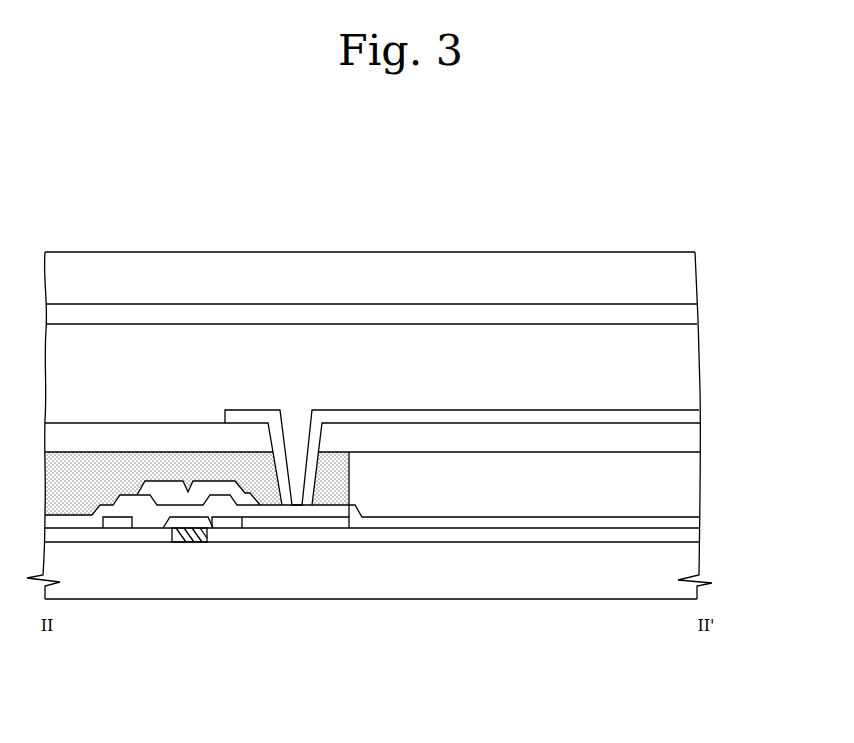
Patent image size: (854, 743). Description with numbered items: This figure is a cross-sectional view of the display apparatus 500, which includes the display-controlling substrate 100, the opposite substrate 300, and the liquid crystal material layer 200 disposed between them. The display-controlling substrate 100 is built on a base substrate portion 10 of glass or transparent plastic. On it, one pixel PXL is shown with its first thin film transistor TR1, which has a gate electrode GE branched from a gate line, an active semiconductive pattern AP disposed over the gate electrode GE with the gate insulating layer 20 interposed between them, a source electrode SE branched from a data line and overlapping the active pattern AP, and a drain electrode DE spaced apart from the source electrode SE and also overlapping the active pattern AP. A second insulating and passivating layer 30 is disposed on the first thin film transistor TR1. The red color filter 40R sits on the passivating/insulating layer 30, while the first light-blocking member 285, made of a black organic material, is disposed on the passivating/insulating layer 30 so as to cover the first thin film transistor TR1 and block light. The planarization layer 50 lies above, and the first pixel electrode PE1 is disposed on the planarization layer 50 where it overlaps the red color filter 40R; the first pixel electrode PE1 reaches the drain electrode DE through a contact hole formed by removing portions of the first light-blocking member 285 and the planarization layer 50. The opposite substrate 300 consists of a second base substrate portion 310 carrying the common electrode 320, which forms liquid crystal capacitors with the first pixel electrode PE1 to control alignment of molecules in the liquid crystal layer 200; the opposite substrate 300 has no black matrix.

The display apparatus 500 is at (688, 205).
The opposite substrate 300 is at (764, 265).
The second base substrate portion 310 is at (688, 275).
The common electrode 320 is at (688, 316).
The liquid crystal material layer 200 is at (688, 368).
The display-controlling substrate 100 is at (764, 432).
The planarization layer 50 is at (688, 437).
The red color filter 40R is at (688, 485).
The first light-blocking member 285 is at (112, 470).
The passivating/insulating layer 30 is at (690, 521).
The gate insulating layer 20 is at (690, 535).
The base substrate portion 10 is at (688, 557).
The pixel PXL is at (160, 694).
The first thin film transistor TR1 is at (247, 660).
The source electrode SE is at (118, 522).
The active semiconductive pattern AP is at (150, 520).
The gate electrode GE is at (190, 536).
The drain electrode DE is at (258, 520).
The first pixel electrode PE1 is at (295, 506).